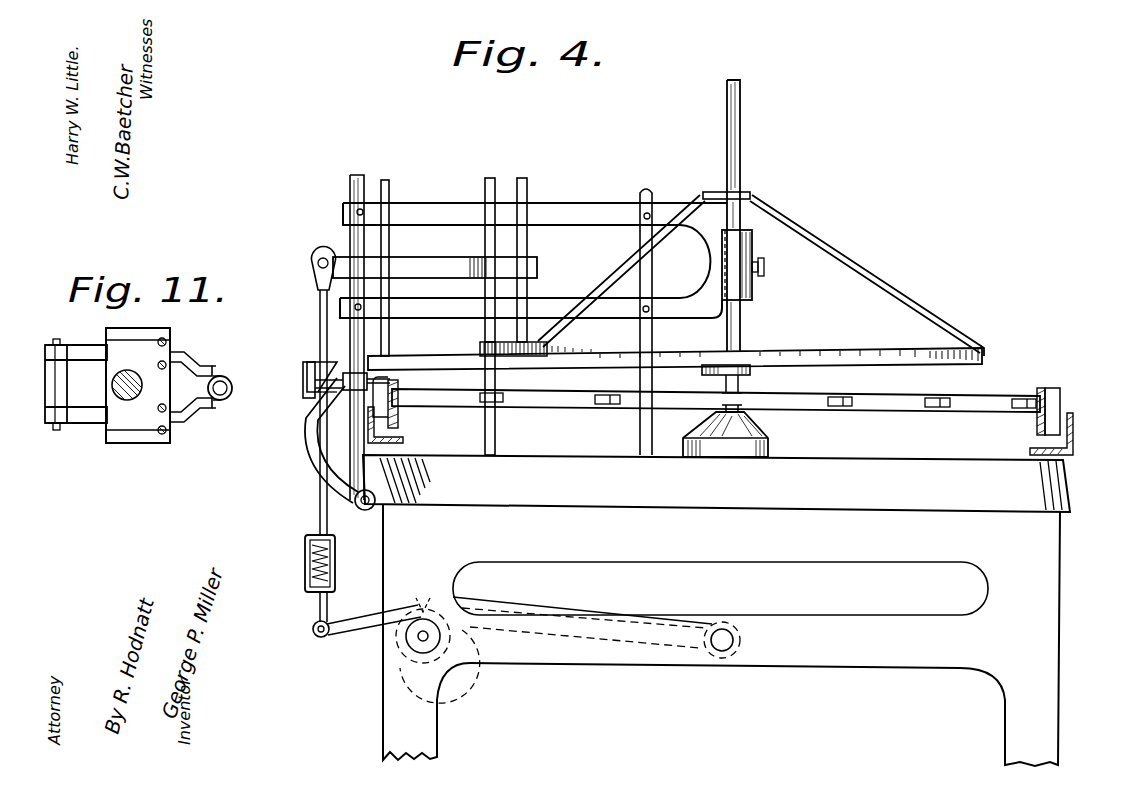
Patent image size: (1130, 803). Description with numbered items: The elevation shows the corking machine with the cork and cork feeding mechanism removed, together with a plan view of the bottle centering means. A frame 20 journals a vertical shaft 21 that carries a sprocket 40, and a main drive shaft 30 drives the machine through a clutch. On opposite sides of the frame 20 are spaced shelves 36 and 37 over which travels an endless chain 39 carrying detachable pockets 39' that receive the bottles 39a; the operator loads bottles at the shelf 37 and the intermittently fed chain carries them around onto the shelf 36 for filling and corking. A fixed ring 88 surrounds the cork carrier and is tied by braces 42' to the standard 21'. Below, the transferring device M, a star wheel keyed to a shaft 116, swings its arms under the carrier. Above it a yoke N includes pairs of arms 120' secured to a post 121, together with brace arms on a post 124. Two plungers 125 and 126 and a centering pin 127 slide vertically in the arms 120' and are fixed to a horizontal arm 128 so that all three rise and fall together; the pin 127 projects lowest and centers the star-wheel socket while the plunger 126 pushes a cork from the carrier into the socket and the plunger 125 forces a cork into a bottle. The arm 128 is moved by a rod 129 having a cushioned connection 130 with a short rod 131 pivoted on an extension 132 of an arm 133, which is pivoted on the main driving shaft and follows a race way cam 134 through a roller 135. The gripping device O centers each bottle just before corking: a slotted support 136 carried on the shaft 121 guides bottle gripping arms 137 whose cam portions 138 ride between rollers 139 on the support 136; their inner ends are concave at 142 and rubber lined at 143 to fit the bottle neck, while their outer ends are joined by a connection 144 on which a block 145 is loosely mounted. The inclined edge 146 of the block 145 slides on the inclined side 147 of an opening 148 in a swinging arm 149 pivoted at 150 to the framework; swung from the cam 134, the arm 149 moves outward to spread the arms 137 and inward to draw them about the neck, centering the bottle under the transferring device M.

In FIG. 4, the frame 20 is at (716, 610).
In FIG. 4, the vertical shaft 21 is at (733, 386).
In FIG. 4, the standard 21' is at (757, 216).
In FIG. 4, the main drive shaft 30 is at (723, 648).
In FIG. 4, the shelf 36 is at (403, 441).
In FIG. 4, the shelf 37 is at (1074, 438).
In FIG. 4, the endless chain 39 is at (726, 397).
In FIG. 4, the pockets 39' is at (1080, 404).
In FIG. 4, the bottles 39a is at (388, 414).
In FIG. 11, the bottles 39a is at (219, 401).
In FIG. 4, the sprocket 40 is at (564, 407).
In FIG. 4, the braces 42' is at (761, 274).
In FIG. 4, the fixed ring 88 is at (888, 356).
In FIG. 4, the shaft 116 is at (495, 432).
In FIG. 4, the arms of the yoke 120' is at (533, 263).
In FIG. 4, the post 121 is at (350, 232).
In FIG. 11, the post 121 is at (120, 398).
In FIG. 4, the post 124 is at (649, 192).
In FIG. 4, the plunger 125 is at (389, 330).
In FIG. 4, the plunger 126 is at (525, 295).
In FIG. 4, the centering pin 127 is at (485, 242).
In FIG. 4, the horizontal arm 128 is at (435, 267).
In FIG. 4, the rod 129 is at (319, 512).
In FIG. 4, the cushioned connection 130 is at (304, 563).
In FIG. 4, the short rod 131 is at (316, 612).
In FIG. 4, the extension 132 is at (347, 613).
In FIG. 4, the arm 133 is at (522, 611).
In FIG. 4, the race way cam 134 is at (461, 604).
In FIG. 4, the roller 135 is at (412, 598).
In FIG. 4, the slotted or grooved support 136 is at (330, 406).
In FIG. 11, the slotted or grooved support 136 is at (138, 444).
In FIG. 11, the bottle gripping arms 137 is at (92, 357).
In FIG. 11, the cam portions 138 is at (186, 410).
In FIG. 11, the rollers 139 is at (167, 343).
In FIG. 11, the concave portions 142 is at (220, 401).
In FIG. 11, the rubber lining 143 is at (219, 371).
In FIG. 11, the connection 144 is at (56, 430).
In FIG. 4, the block 145 is at (312, 361).
In FIG. 11, the block 145 is at (60, 377).
In FIG. 4, the inclined edge 146 is at (343, 372).
In FIG. 4, the inclined side 147 is at (305, 390).
In FIG. 4, the opening 148 is at (306, 396).
In FIG. 4, the swinging arm 149 is at (308, 438).
In FIG. 4, the pivot 150 is at (377, 498).
In FIG. 4, the transferring device M is at (460, 344).
In FIG. 4, the yoke N is at (617, 228).
In FIG. 11, the gripping device O is at (148, 418).